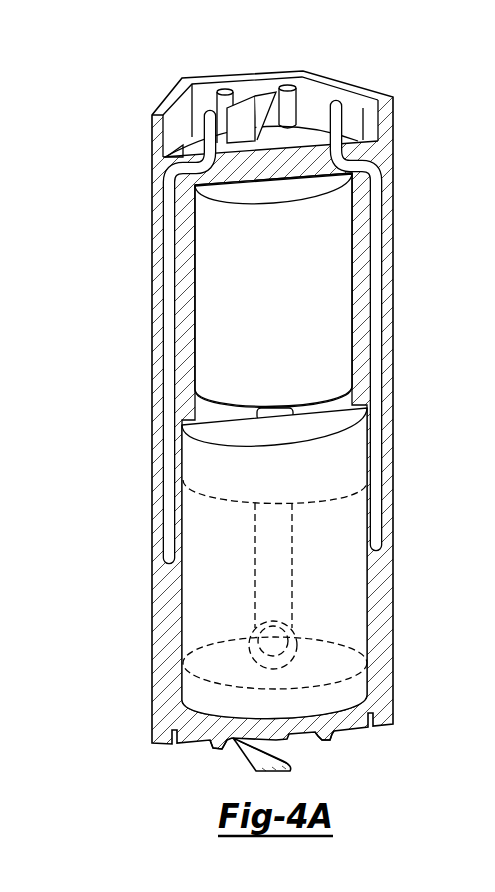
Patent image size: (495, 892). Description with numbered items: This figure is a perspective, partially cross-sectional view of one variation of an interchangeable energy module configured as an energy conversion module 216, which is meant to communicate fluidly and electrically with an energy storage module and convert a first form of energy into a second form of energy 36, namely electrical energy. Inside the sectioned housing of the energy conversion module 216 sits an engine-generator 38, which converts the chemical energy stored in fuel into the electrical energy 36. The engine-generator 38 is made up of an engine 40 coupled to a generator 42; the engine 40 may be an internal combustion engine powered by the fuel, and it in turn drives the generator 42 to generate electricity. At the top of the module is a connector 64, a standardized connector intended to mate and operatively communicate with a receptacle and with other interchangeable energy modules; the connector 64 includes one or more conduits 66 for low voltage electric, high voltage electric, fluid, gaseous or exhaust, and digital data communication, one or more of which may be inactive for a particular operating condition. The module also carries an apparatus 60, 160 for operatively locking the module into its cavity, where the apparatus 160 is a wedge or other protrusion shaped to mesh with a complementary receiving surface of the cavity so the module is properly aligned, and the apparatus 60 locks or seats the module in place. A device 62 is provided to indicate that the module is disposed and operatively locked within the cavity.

The second form of energy 36 is at (288, 296).
The engine-generator 38 is at (90, 360).
The engine 40 is at (292, 576).
The generator 42 is at (353, 297).
The apparatus 60 is at (244, 765).
The device 62 is at (215, 750).
The connector 64 is at (303, 62).
The conduit 66 is at (335, 100).
The apparatus 160 is at (247, 96).
The energy conversion module 216 is at (393, 440).